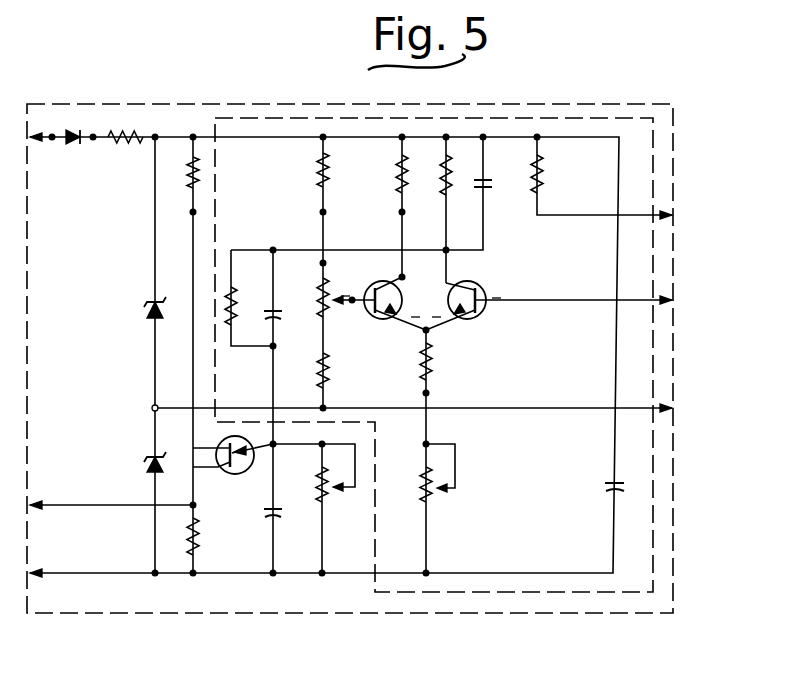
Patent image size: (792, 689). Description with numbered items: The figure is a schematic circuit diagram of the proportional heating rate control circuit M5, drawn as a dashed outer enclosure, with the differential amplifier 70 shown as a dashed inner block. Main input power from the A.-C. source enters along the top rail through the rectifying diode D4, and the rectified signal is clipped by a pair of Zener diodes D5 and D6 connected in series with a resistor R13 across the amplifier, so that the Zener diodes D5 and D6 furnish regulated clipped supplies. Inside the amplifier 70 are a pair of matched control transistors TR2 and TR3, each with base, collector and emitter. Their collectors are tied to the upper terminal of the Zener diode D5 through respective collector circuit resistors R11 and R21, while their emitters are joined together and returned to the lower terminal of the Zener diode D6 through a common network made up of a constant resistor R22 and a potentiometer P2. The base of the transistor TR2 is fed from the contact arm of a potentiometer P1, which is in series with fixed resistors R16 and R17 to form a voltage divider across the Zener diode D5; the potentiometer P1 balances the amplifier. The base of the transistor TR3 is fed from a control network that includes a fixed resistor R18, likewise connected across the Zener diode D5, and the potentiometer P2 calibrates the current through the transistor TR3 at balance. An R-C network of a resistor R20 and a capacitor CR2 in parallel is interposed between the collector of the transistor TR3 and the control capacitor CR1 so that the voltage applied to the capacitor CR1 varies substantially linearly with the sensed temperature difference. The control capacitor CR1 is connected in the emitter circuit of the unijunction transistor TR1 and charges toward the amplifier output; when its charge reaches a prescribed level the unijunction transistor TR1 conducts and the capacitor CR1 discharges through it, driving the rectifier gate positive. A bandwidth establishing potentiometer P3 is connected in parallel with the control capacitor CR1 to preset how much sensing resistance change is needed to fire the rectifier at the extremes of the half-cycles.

The heating rate control circuit M5 is at (673, 134).
The differential amplifier 70 is at (495, 592).
The rectifying diode D4 is at (70, 130).
The resistor R13 is at (128, 128).
The fixed resistor R16 is at (318, 176).
The collector circuit resistor R11 is at (398, 180).
The collector circuit resistor R21 is at (442, 177).
The fixed resistor R18 is at (545, 176).
The resistor R20 is at (238, 298).
The potentiometer P1 is at (320, 296).
The Zener diode D5 is at (150, 302).
The capacitor CR2 is at (284, 308).
The control transistor TR2 is at (372, 315).
The control transistor TR3 is at (483, 317).
The fixed resistor R17 is at (330, 368).
The constant resistor R22 is at (436, 358).
The Zener diode D6 is at (150, 457).
The unijunction transistor TR1 is at (240, 474).
The control capacitor CR1 is at (279, 518).
The potentiometer P3 is at (326, 496).
The potentiometer P2 is at (432, 498).